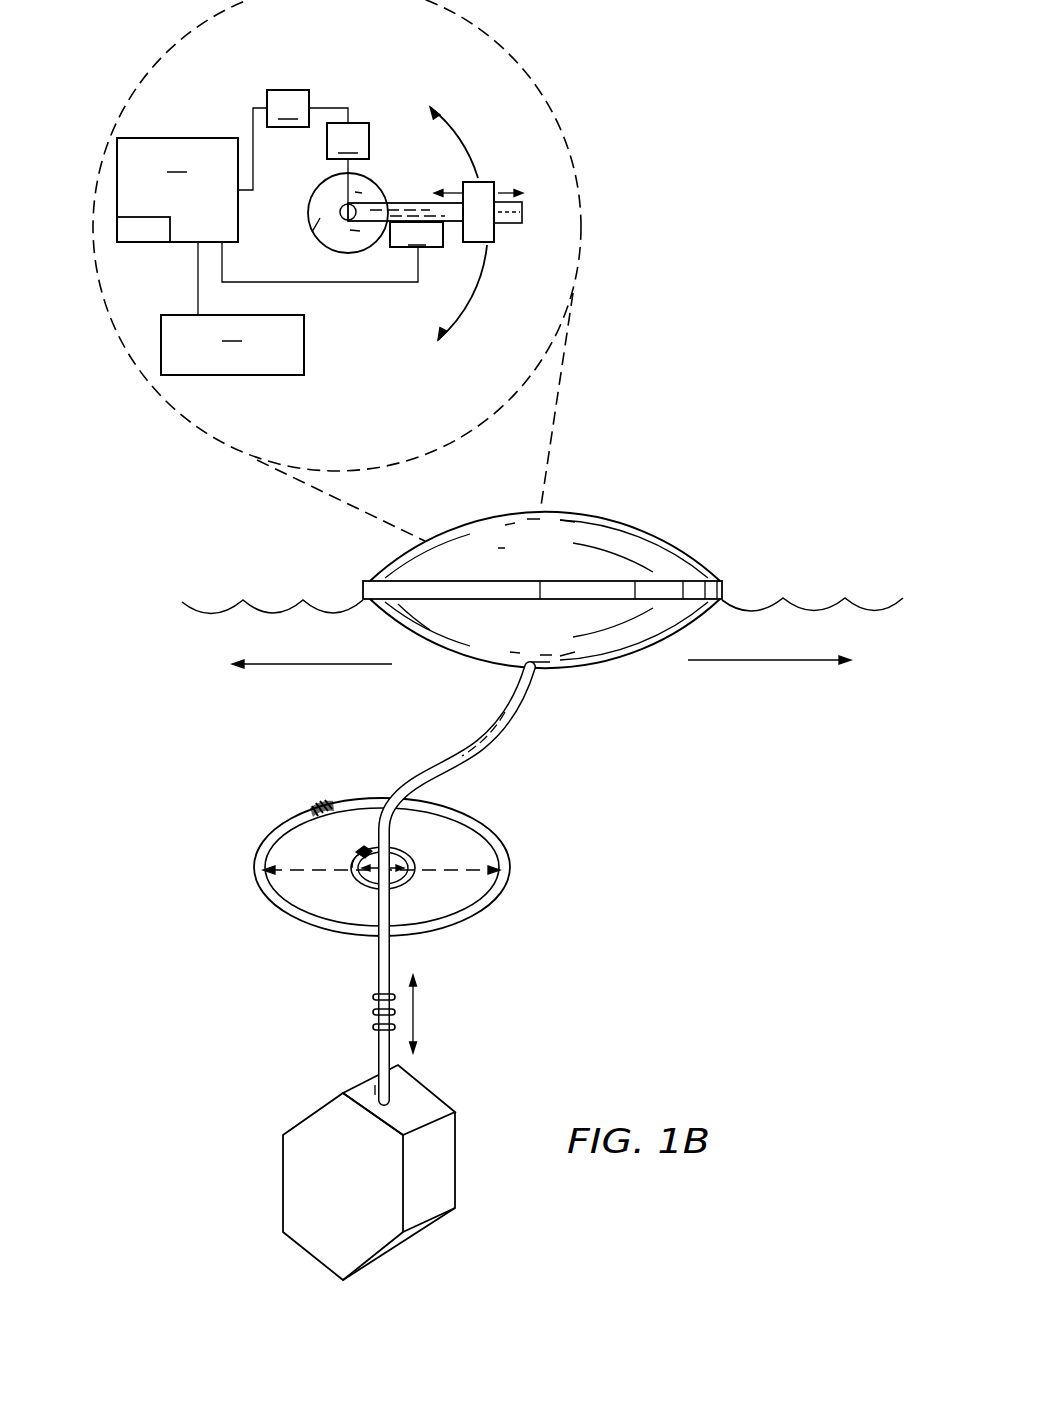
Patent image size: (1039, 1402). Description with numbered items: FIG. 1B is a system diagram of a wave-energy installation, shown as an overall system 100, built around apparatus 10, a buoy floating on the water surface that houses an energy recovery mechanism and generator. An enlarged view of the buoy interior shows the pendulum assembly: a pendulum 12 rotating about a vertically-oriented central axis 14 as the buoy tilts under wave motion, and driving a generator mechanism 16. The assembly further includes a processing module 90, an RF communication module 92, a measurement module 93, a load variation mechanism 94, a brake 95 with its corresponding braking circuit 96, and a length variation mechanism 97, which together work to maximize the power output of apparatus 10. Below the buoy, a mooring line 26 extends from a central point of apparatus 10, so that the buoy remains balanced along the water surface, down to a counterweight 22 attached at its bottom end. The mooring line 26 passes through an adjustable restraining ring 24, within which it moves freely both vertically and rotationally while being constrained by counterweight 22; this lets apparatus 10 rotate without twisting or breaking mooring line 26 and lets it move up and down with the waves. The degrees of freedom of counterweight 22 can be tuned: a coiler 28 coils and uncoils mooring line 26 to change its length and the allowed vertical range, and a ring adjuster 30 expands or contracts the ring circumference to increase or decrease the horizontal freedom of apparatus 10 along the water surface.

The apparatus 10 is at (537, 87).
The pendulum 12 is at (490, 232).
The vertically-oriented axis 14 is at (342, 207).
The generator mechanism 16 is at (312, 232).
The counterweight 22 is at (440, 1168).
The adjustable restraining ring 24 is at (475, 823).
The mooring line 26 is at (504, 727).
The coiler 28 is at (374, 1014).
The ring adjuster 30 is at (318, 808).
The processing module 90 is at (267, 211).
The RF communication module 92 is at (117, 230).
The measurement module 93 is at (232, 345).
The load variation mechanism 94 is at (348, 164).
The brake 95 is at (368, 197).
The braking circuit 96 is at (307, 108).
The length variation mechanism 97 is at (416, 234).
The system 100 is at (780, 443).